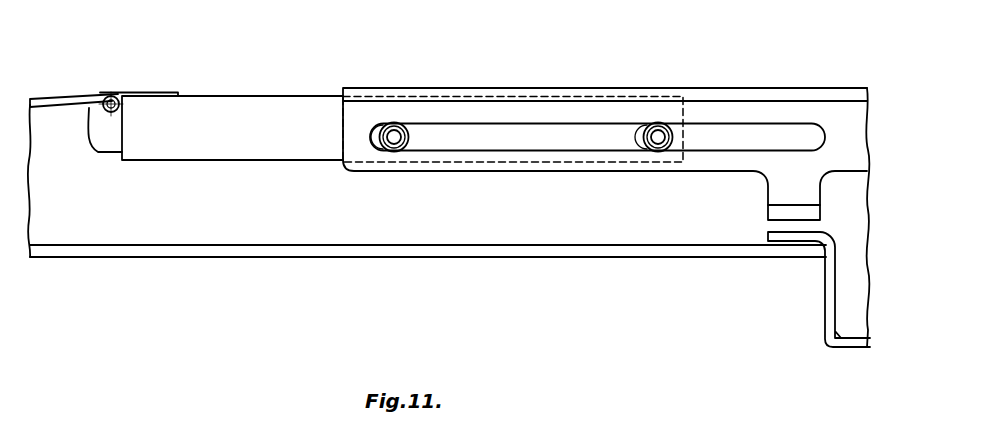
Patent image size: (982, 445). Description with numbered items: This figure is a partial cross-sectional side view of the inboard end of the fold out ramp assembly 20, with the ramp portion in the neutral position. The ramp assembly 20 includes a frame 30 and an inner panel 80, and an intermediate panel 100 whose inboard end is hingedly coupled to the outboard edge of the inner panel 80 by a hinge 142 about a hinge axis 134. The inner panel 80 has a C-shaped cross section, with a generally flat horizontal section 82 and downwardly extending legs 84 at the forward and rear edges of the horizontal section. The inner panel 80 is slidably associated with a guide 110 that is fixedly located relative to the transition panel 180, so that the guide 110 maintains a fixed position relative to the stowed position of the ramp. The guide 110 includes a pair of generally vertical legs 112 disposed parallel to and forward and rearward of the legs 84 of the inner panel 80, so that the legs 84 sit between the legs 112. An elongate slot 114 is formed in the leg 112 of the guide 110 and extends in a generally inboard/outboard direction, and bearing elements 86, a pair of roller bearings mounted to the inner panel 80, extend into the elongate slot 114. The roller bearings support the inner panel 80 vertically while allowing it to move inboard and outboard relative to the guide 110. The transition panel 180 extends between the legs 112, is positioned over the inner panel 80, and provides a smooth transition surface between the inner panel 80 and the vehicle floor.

The ramp assembly 20 is at (93, 272).
The frame 30 is at (422, 257).
The inner panel 80 is at (199, 160).
The horizontal section 82 is at (257, 95).
The legs 84 is at (89, 108).
The bearing elements 86 is at (408, 130).
The intermediate panel 100 is at (42, 97).
The guide 110 is at (756, 183).
The legs 112 is at (557, 172).
The elongate slot 114 is at (823, 124).
The hinge axis 134 is at (107, 97).
The hinge 142 is at (143, 92).
The transition panel 180 is at (717, 88).